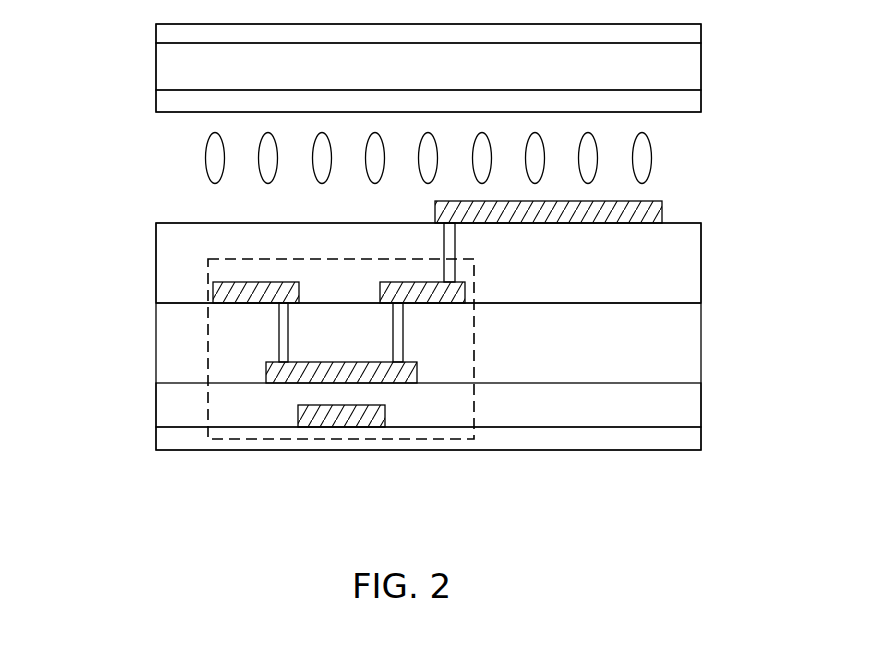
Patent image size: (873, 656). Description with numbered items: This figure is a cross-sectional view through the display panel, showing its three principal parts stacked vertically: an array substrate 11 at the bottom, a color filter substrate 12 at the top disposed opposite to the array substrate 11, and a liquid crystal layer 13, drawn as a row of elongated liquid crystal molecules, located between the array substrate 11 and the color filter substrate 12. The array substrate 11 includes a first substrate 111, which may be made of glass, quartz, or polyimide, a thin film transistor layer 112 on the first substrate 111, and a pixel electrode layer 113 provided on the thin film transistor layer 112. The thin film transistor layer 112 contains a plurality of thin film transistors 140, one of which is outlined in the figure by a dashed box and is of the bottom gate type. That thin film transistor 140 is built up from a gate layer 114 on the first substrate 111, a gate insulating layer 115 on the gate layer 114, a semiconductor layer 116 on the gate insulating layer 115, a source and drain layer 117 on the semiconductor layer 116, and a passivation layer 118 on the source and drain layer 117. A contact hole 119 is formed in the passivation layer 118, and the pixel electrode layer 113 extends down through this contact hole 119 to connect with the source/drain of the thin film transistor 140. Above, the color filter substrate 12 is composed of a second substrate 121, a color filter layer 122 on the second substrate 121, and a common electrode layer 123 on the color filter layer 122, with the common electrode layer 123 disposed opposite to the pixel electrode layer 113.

The array substrate 11 is at (80, 210).
The color filter substrate 12 is at (145, 28).
The liquid crystal layer 13 is at (145, 124).
The first substrate 111 is at (692, 443).
The thin film transistor layer 112 is at (145, 240).
The pixel electrode layer 113 is at (637, 216).
The gate layer 114 is at (345, 415).
The gate insulating layer 115 is at (692, 408).
The semiconductor layer 116 is at (391, 378).
The source and drain layer 117 is at (460, 296).
The passivation layer 118 is at (692, 268).
The contact hole 119 is at (453, 252).
The second substrate 121 is at (693, 46).
The color filter layer 122 is at (693, 76).
The common electrode layer 123 is at (693, 107).
The thin film transistor 140 is at (243, 448).